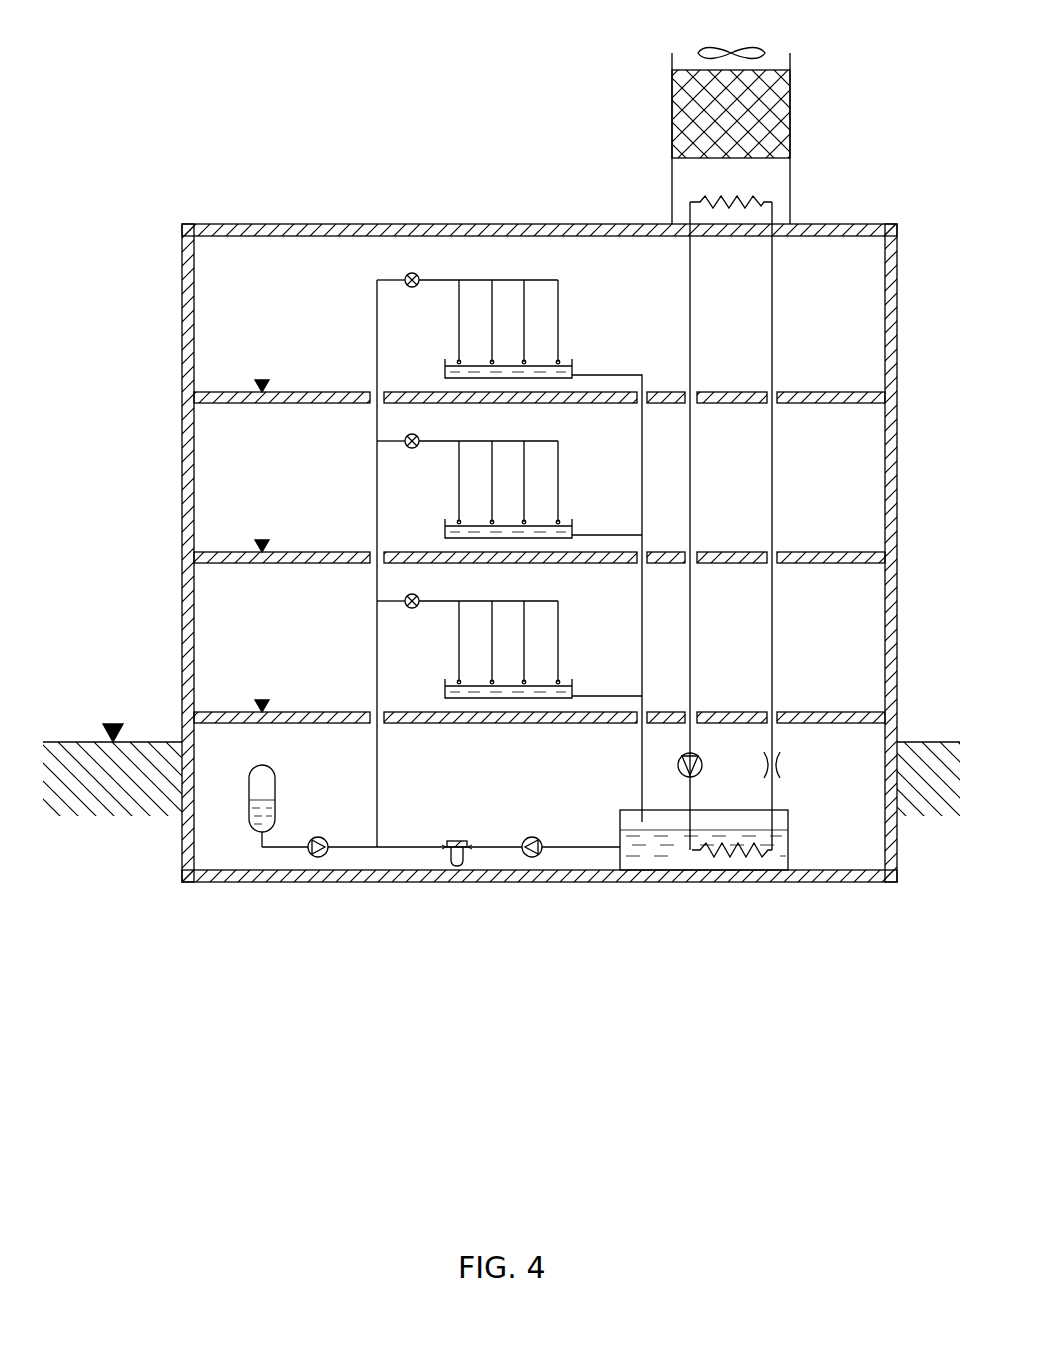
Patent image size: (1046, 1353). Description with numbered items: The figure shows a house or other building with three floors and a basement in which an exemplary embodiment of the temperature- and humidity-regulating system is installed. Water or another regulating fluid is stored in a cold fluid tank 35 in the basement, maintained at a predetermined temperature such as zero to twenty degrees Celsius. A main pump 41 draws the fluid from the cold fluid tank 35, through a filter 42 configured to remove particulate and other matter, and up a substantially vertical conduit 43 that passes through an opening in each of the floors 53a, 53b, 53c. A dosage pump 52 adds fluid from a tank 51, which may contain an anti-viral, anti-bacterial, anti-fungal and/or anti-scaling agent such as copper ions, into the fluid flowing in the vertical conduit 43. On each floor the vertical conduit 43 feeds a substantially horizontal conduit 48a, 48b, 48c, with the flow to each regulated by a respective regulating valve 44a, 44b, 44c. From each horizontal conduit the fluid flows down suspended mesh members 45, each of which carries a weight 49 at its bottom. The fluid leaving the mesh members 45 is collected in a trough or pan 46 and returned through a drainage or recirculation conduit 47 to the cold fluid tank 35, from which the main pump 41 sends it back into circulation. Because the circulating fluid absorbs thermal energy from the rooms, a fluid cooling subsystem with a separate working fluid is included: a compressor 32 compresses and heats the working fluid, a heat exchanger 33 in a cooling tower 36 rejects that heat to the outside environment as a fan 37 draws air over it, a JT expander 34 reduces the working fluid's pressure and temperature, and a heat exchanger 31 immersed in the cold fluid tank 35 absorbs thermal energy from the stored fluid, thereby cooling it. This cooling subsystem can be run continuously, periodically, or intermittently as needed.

The heat exchanger 31 is at (735, 851).
The compressor 32 is at (706, 768).
The heat exchanger 33 is at (731, 192).
The JT expander 34 is at (791, 767).
The cold fluid tank 35 is at (789, 818).
The cooling tower 36 is at (791, 104).
The fan 37 is at (731, 42).
The main pump 41 is at (532, 837).
The filter 42 is at (457, 842).
The vertical conduit 43 is at (378, 757).
The regulating valve 44a is at (403, 269).
The regulating valve 44b is at (403, 430).
The regulating valve 44c is at (402, 590).
The mesh member 45 is at (559, 314).
The trough or pan 46 is at (574, 370).
The drainage or recirculation conduit 47 is at (642, 757).
The horizontal conduit 48a is at (486, 280).
The horizontal conduit 48b is at (486, 441).
The horizontal conduit 48c is at (486, 601).
The weight 49 is at (459, 362).
The tank 51 is at (262, 794).
The dosage pump 52 is at (319, 837).
The floor 53a is at (291, 711).
The floor 53b is at (291, 551).
The floor 53c is at (291, 391).